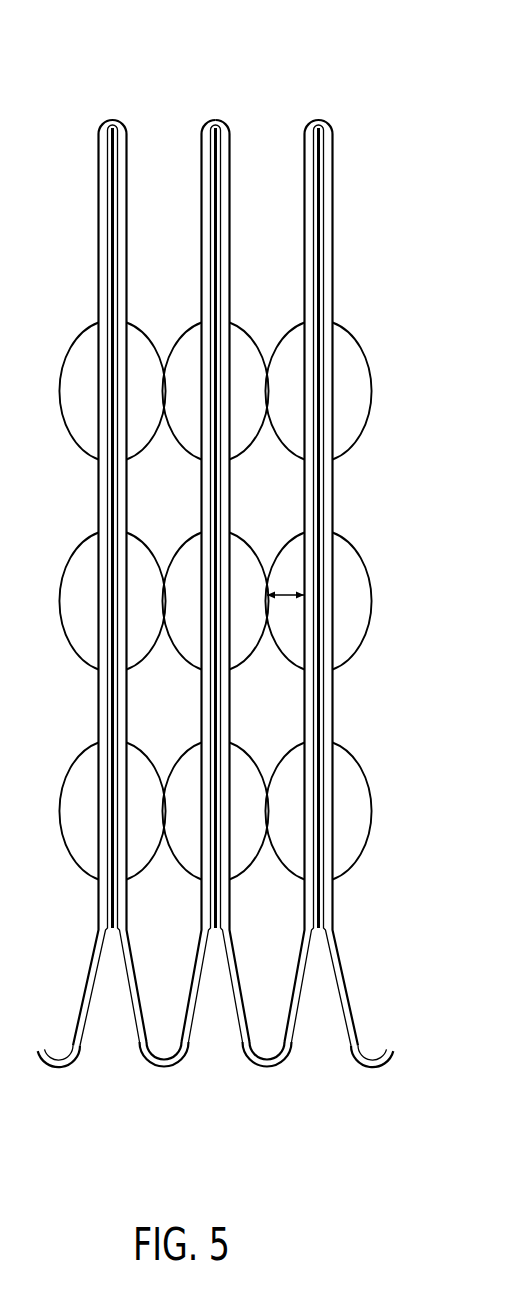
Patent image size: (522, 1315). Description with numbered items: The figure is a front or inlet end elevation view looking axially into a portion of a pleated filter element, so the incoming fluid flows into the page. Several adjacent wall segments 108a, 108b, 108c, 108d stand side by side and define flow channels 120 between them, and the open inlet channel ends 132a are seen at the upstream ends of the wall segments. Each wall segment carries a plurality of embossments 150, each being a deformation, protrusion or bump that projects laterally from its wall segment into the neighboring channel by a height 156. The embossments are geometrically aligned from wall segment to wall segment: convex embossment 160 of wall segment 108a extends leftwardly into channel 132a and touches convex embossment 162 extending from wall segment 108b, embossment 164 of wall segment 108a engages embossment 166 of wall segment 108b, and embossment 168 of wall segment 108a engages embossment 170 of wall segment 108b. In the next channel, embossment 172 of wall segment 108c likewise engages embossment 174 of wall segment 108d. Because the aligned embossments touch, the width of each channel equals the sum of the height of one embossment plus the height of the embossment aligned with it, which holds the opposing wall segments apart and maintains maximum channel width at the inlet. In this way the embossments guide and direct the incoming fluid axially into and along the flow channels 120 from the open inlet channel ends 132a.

The wall segment 108a is at (305, 147).
The wall segment 108b is at (232, 145).
The wall segment 108c is at (201, 147).
The wall segment 108d is at (128, 144).
The flow channel 120 is at (265, 1013).
The open inlet channel end 132a is at (193, 514).
The embossment 150 is at (245, 587).
The height 156 is at (282, 597).
The embossment 160 is at (296, 321).
The embossment 162 is at (236, 322).
The embossment 164 is at (284, 548).
The embossment 166 is at (236, 530).
The embossment 168 is at (281, 758).
The embossment 170 is at (235, 742).
The embossment 172 is at (194, 320).
The embossment 174 is at (137, 322).